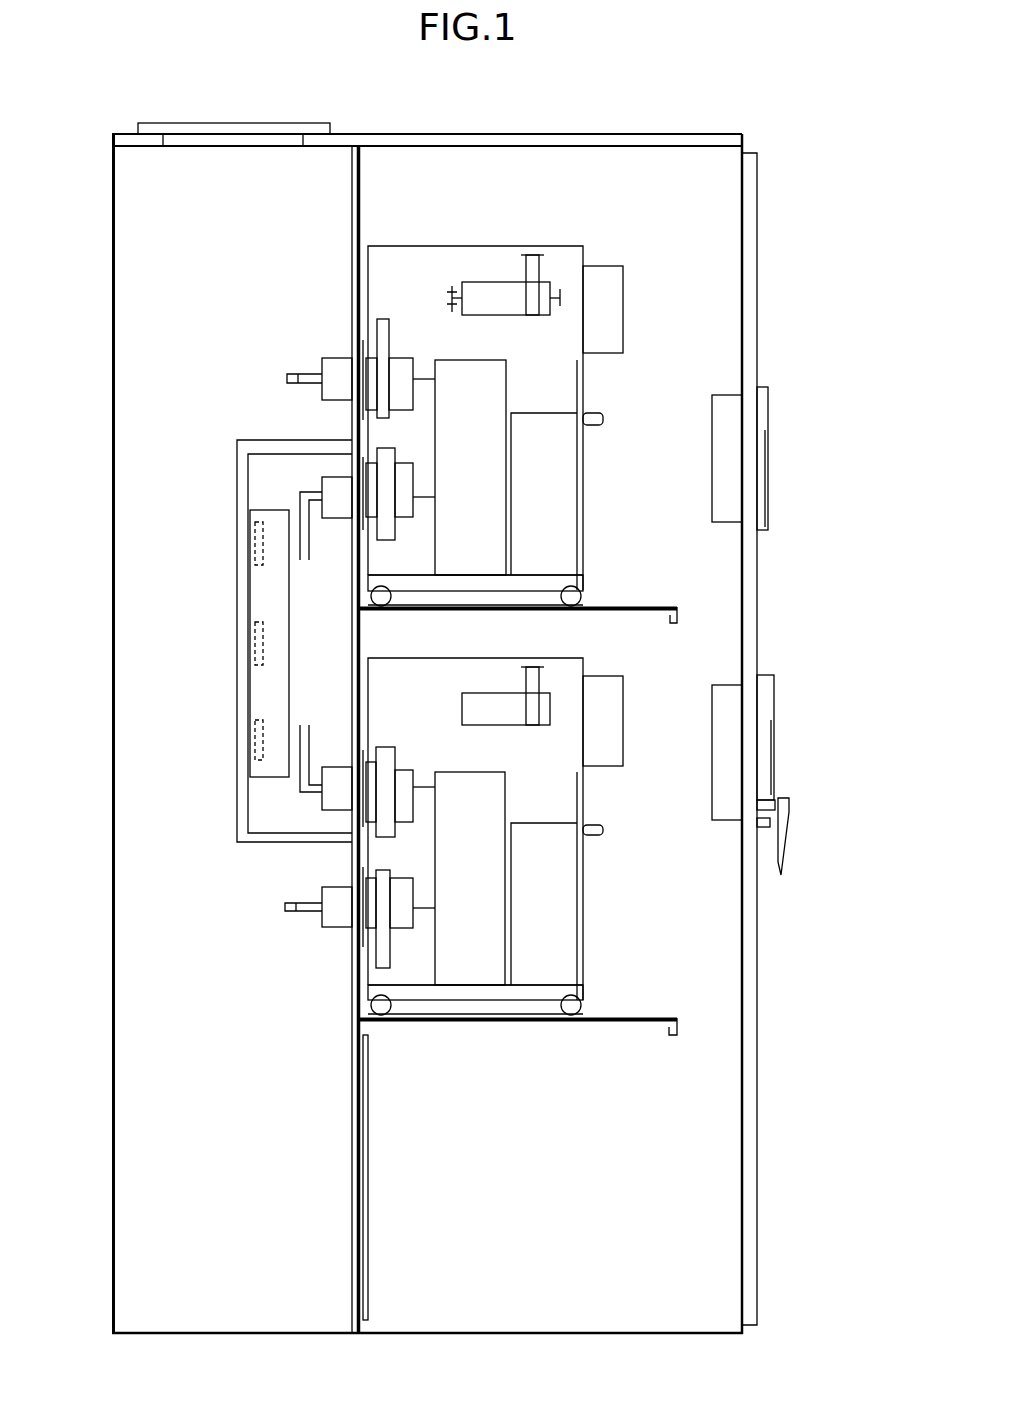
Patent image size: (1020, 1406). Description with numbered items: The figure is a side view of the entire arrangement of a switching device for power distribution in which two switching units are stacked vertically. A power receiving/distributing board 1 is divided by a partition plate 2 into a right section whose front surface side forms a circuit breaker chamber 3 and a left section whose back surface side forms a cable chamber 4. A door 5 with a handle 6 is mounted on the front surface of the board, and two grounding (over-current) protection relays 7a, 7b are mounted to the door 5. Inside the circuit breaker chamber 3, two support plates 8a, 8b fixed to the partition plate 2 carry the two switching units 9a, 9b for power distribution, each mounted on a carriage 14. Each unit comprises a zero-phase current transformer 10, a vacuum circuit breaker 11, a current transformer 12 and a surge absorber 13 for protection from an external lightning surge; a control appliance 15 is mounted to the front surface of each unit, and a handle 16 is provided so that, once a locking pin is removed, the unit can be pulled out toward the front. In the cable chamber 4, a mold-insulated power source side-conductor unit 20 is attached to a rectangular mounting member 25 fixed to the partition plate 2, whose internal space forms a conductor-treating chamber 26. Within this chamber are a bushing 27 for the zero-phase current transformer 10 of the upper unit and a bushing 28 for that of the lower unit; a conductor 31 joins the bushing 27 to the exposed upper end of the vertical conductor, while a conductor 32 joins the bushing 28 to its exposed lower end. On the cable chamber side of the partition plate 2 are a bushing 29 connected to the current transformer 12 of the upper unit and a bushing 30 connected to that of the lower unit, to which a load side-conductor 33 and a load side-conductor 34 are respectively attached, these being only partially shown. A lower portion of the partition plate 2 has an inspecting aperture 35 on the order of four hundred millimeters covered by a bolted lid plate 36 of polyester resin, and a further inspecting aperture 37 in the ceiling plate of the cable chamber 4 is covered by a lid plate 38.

The power receiving/distributing board 1 is at (847, 130).
The partition plate 2 is at (352, 206).
The circuit breaker chamber 3 is at (742, 983).
The cable chamber 4 is at (113, 985).
The door 5 is at (757, 318).
The handle 6 is at (789, 812).
The grounding (over-current) protection relay 7a is at (768, 430).
The grounding (over-current) protection relay 7b is at (774, 700).
The support plate 8a is at (640, 612).
The support plate 8b is at (640, 1024).
The switching unit for power distribution 9a is at (434, 252).
The switching unit for power distribution 9b is at (452, 660).
The zero-phase current transformer 10 is at (386, 457).
The vacuum circuit breaker 11 is at (497, 387).
The current transformer 12 is at (386, 336).
The surge absorber 13 is at (510, 312).
The carriage 14 is at (583, 590).
The control appliance 15 is at (623, 300).
The handle 16 is at (603, 413).
The power source side-conductor unit 20 is at (247, 580).
The mounting member 25 is at (240, 478).
The conductor-treating chamber 26 is at (290, 663).
The bushing 27 is at (322, 490).
The bushing 28 is at (322, 802).
The bushing 29 is at (342, 358).
The bushing 30 is at (336, 929).
The conductor 31 is at (305, 565).
The conductor 32 is at (305, 726).
The load side-conductor 33 is at (290, 374).
The load side-conductor 34 is at (292, 912).
The inspecting aperture 35 is at (351, 1154).
The lid plate 36 is at (368, 1094).
The inspecting aperture 37 is at (200, 142).
The lid plate 38 is at (232, 124).